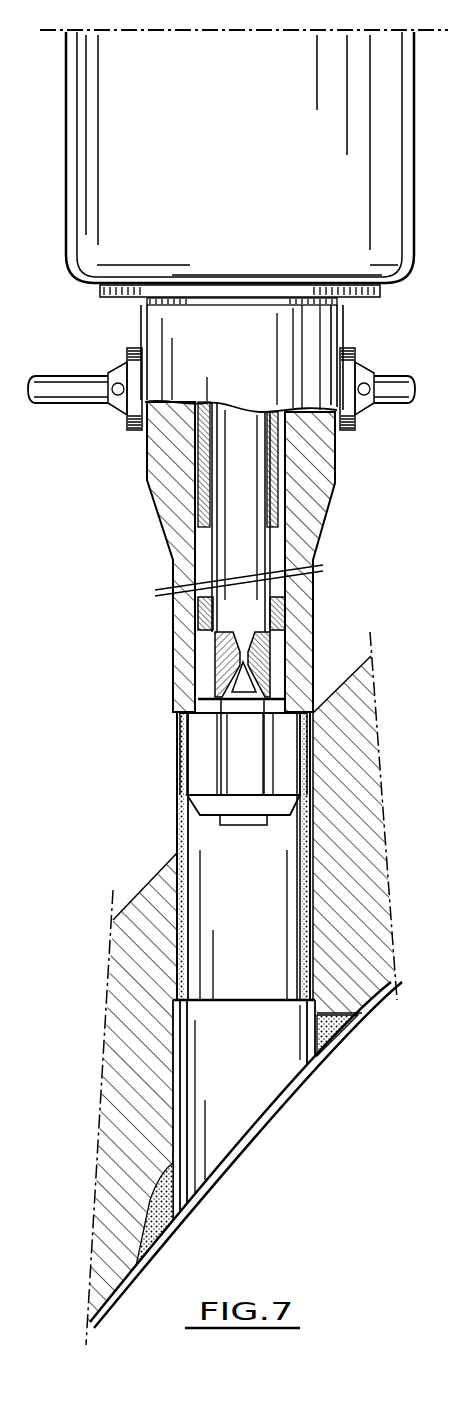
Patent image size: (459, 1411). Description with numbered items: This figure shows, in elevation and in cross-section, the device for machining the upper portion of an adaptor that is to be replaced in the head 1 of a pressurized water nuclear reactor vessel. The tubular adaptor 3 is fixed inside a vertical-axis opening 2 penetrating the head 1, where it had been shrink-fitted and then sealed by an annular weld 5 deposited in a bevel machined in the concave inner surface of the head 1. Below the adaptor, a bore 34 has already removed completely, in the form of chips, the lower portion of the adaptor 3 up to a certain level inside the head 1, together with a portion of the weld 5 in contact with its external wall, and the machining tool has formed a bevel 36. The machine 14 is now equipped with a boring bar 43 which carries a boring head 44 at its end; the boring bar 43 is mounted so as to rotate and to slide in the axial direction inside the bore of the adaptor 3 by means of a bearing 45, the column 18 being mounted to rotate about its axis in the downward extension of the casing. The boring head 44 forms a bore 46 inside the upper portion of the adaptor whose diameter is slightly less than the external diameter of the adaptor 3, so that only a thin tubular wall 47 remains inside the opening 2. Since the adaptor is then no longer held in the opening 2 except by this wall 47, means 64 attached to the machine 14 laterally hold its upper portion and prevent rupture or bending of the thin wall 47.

The machine 14 is at (424, 258).
The means for laterally holding the upper portion of the adaptor 64 is at (84, 386).
The adaptor 3 is at (300, 519).
The column 18 is at (182, 560).
The bearing 45 is at (200, 615).
The boring bar 43 is at (215, 677).
The boring head 44 is at (226, 800).
The head of a vessel 1 is at (148, 904).
The opening 2 is at (313, 864).
The bore 46 is at (218, 915).
The thin tubular wall 47 is at (188, 947).
The bore 34 is at (207, 1072).
The annular weld 5 is at (340, 1042).
The bevel 36 is at (306, 1082).